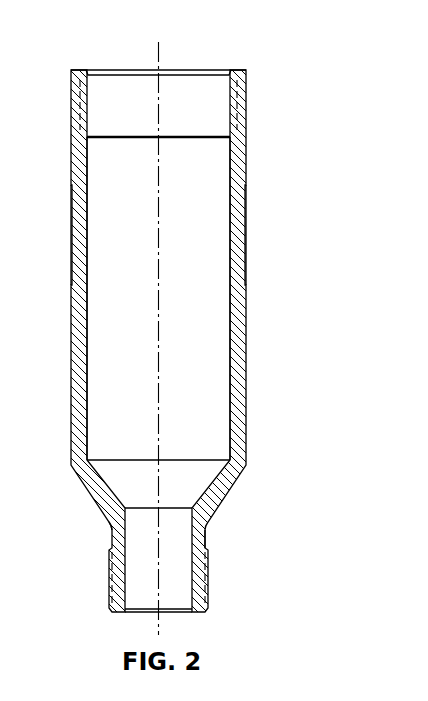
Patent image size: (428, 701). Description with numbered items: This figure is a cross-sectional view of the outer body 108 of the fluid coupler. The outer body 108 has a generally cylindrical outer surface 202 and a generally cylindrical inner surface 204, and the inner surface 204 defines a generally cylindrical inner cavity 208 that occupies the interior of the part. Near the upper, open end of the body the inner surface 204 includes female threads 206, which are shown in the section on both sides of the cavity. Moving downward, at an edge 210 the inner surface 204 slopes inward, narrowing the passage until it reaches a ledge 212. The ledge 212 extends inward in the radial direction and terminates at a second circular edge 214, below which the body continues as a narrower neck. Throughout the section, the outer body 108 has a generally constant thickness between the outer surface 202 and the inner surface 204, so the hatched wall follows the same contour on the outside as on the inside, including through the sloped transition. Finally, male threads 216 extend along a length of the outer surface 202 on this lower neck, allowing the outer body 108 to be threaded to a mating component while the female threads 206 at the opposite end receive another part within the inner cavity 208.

The outer body 108 is at (312, 253).
The outer surface 202 is at (246, 108).
The inner surface 204 is at (232, 215).
The female threads 206 is at (87, 93).
The inner cavity 208 is at (203, 180).
The edge 210 is at (232, 460).
The ledge 212 is at (206, 521).
The second circular edge 214 is at (110, 527).
The male threads 216 is at (208, 572).